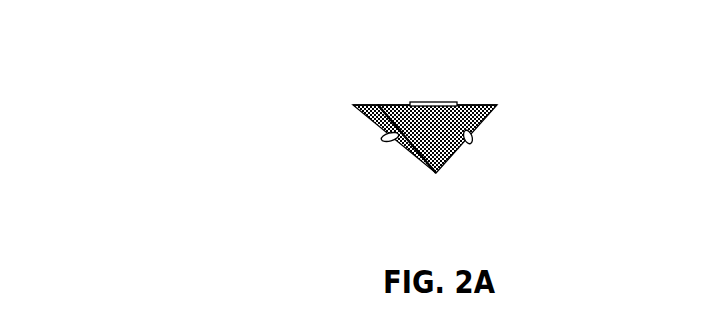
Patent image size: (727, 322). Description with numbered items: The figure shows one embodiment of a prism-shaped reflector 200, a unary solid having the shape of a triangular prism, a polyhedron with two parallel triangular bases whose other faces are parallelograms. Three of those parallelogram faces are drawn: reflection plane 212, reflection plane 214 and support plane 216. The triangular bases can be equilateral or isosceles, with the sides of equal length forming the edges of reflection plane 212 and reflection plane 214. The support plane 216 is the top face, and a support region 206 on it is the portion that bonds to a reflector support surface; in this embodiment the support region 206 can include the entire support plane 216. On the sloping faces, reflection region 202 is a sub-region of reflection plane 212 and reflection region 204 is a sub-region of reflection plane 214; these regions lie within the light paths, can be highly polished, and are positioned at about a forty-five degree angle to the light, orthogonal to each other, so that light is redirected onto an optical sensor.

The prism-shaped reflector 200 is at (237, 22).
The reflection region 202 is at (392, 143).
The reflection region 204 is at (465, 136).
The support region 206 is at (448, 102).
The reflection plane 212 is at (403, 163).
The reflection plane 214 is at (438, 176).
The support plane 216 is at (478, 104).